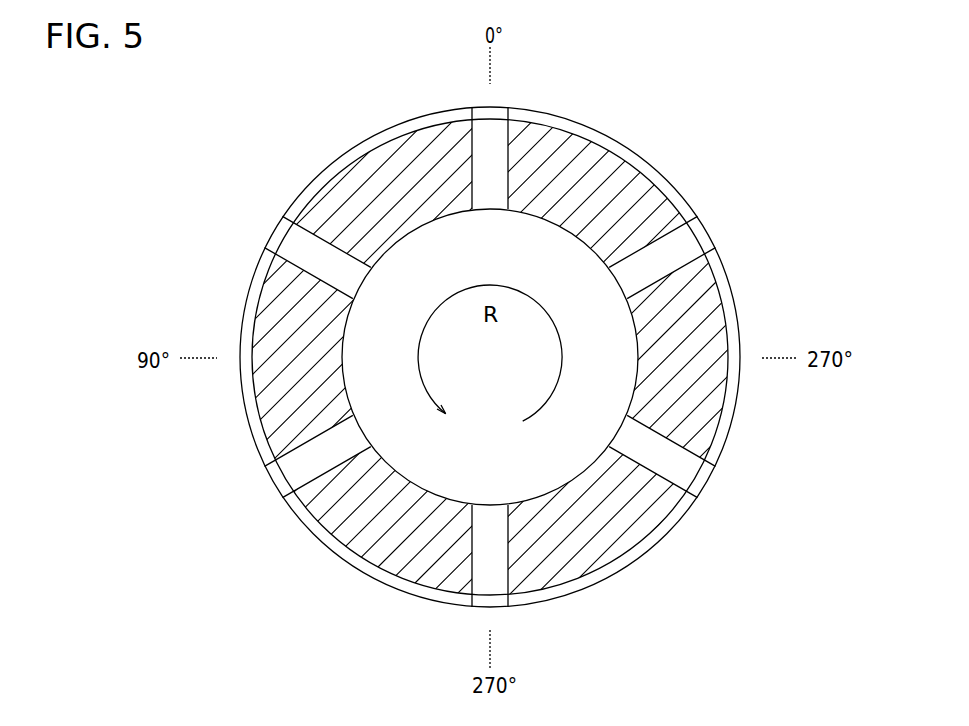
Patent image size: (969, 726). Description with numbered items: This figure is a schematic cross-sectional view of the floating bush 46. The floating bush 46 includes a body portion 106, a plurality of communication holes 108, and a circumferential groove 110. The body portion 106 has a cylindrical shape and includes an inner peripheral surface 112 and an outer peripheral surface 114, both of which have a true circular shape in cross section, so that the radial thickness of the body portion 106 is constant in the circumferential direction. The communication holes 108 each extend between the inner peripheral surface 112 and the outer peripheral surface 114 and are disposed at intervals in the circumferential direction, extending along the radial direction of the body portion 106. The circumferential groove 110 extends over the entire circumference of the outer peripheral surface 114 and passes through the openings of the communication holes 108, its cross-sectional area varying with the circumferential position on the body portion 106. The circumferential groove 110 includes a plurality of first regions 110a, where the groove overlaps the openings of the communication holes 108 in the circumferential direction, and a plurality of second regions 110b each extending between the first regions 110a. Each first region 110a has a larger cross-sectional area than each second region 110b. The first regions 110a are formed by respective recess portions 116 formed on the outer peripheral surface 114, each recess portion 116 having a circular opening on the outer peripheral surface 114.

The floating bush 46 is at (510, 305).
The body portion 106 is at (677, 182).
The communication holes 108 is at (702, 228).
The circumferential groove 110 is at (474, 348).
The first regions 110a is at (277, 238).
The second regions 110b is at (323, 177).
The inner peripheral surface 112 is at (416, 230).
The outer peripheral surface 114 is at (740, 315).
The recess portions 116 is at (277, 482).